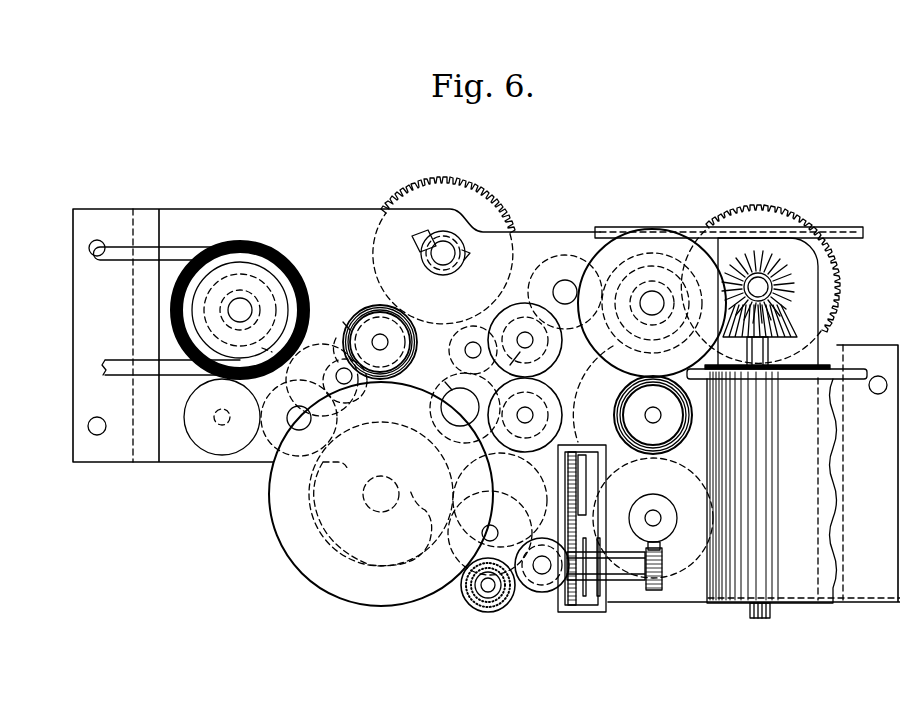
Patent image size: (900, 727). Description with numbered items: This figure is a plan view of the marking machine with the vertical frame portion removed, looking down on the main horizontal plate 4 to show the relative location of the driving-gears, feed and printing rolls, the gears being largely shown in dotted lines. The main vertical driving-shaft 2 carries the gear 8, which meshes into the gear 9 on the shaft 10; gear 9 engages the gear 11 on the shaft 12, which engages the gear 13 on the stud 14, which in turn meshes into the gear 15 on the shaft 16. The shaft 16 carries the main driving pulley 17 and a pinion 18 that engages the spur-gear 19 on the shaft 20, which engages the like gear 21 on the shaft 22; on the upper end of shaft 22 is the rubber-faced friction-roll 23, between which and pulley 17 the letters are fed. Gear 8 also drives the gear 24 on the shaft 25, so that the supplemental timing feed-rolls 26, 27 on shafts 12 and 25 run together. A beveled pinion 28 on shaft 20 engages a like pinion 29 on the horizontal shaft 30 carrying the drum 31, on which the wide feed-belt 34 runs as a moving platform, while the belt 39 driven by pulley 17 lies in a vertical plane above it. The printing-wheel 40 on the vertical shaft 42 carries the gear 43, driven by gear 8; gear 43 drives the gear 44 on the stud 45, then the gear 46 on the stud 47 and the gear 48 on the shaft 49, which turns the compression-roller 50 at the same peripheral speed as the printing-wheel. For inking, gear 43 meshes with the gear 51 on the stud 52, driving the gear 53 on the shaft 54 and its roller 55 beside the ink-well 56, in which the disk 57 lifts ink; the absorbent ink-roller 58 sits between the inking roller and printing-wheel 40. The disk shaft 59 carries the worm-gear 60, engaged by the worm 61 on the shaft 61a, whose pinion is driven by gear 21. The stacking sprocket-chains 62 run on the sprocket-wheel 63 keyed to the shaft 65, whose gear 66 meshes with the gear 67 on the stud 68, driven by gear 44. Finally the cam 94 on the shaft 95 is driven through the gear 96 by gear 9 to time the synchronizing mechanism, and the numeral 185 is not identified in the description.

The main horizontal plate 4 is at (328, 210).
The main vertical driving-shaft 2 is at (465, 408).
The gear 8 is at (445, 382).
The gear 9 is at (452, 352).
The shaft 10 is at (469, 341).
The gear 11 is at (510, 365).
The shaft 12 is at (525, 340).
The gear 13 is at (553, 264).
The stud 14 is at (563, 282).
The gear 15 is at (640, 264).
The shaft 16 is at (646, 298).
The main or driving pulley 17 is at (648, 229).
The pinion 18 is at (661, 282).
The spur-gear 19 is at (742, 205).
The shaft 20 is at (762, 287).
The gear 21 is at (580, 404).
The shaft 22 is at (646, 415).
The friction-roll 23 is at (618, 426).
The gear 24 is at (548, 402).
The shaft 25 is at (525, 416).
The secondary or supplemental timing feed-roll 26 is at (592, 352).
The secondary or supplemental timing feed-roll 27 is at (501, 500).
The beveled pinion 28 is at (789, 306).
The pinion 29 is at (772, 343).
The horizontal shaft 30 is at (746, 360).
The drum 31 is at (795, 372).
The feed-belt 34 is at (772, 487).
The belt 39 is at (840, 226).
The printing-wheel 40 is at (421, 606).
The vertical shaft 42 is at (400, 494).
The gear 43 is at (402, 424).
The gear 44 is at (268, 443).
The stud 45 is at (299, 434).
The gear 46 is at (340, 336).
The stud 47 is at (353, 380).
The gear 48 is at (372, 312).
The shaft 49 is at (380, 340).
The compression-roller 50 is at (343, 322).
The gear 51 is at (502, 492).
The stud 52 is at (496, 530).
The gear 53 is at (536, 593).
The shaft 54 is at (544, 575).
The roller 55 is at (574, 595).
The ink-well 56 is at (612, 609).
The disk 57 is at (596, 588).
The ink-roller 58 is at (480, 611).
The shaft 59 is at (663, 566).
The worm-gear 60 is at (677, 526).
The worm 61 is at (661, 516).
The shaft 61a is at (653, 510).
The sprocket-chains 62 is at (176, 247).
The sprocket-wheel 63 is at (290, 254).
The shaft 65 is at (227, 309).
The gear 66 is at (240, 310).
The gear 67 is at (322, 376).
The stud 68 is at (272, 352).
The cam 94 is at (413, 243).
The shaft 95 is at (449, 266).
The gear 96 is at (498, 196).
The hub 185 is at (251, 310).